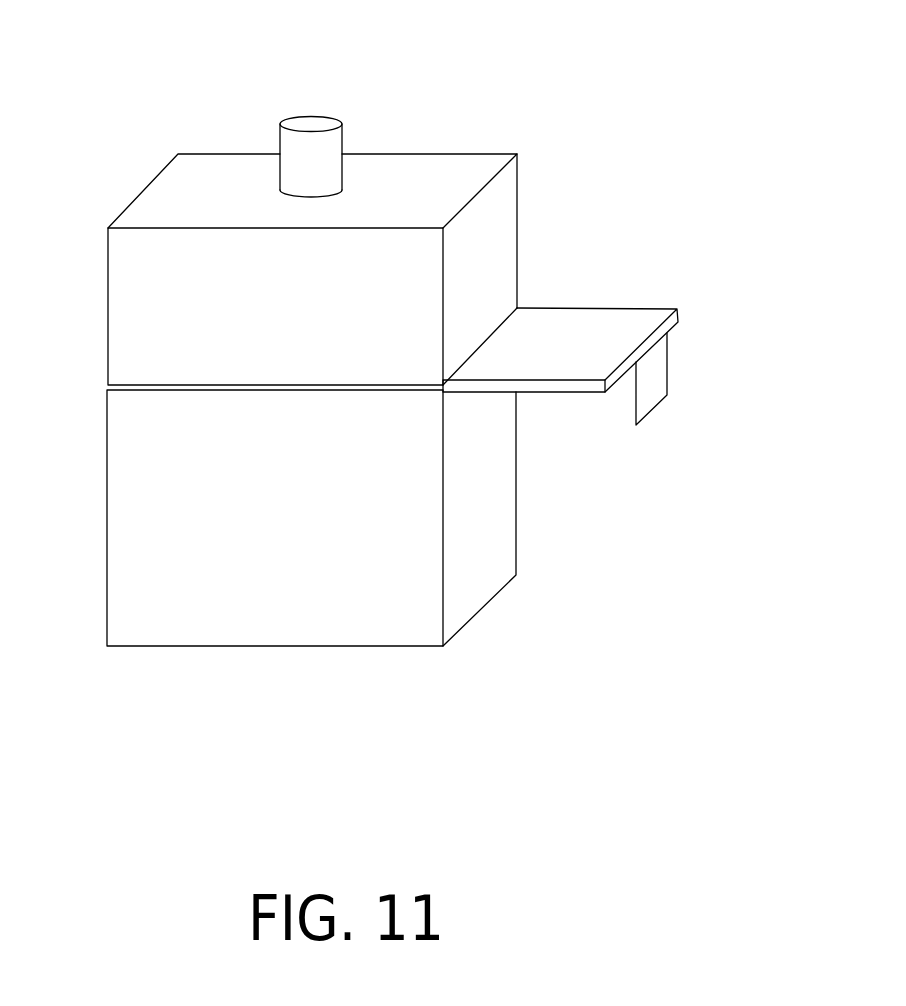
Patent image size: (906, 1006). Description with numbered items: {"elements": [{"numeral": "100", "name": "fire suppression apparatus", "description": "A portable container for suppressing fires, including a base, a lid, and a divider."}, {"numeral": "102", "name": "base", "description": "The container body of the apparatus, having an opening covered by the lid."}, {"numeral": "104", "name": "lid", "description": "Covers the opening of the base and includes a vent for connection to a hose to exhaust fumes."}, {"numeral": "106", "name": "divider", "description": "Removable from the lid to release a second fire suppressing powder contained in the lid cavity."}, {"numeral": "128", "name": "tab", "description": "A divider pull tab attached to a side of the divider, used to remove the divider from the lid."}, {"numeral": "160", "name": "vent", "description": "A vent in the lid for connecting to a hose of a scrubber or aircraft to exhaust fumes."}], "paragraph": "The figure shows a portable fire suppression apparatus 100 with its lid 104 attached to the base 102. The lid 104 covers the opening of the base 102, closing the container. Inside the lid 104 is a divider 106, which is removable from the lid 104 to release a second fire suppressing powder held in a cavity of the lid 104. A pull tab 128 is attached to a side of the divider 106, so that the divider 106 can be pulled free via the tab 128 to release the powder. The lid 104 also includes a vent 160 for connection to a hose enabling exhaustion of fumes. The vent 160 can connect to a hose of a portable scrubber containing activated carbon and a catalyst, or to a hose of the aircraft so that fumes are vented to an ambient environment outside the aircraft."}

The apparatus 100 is at (123, 115).
The lower housing 102 is at (470, 518).
The upper housing 104 is at (485, 260).
The shelf 106 is at (602, 320).
The bracket 128 is at (648, 385).
The cylindrical port 160 is at (298, 115).